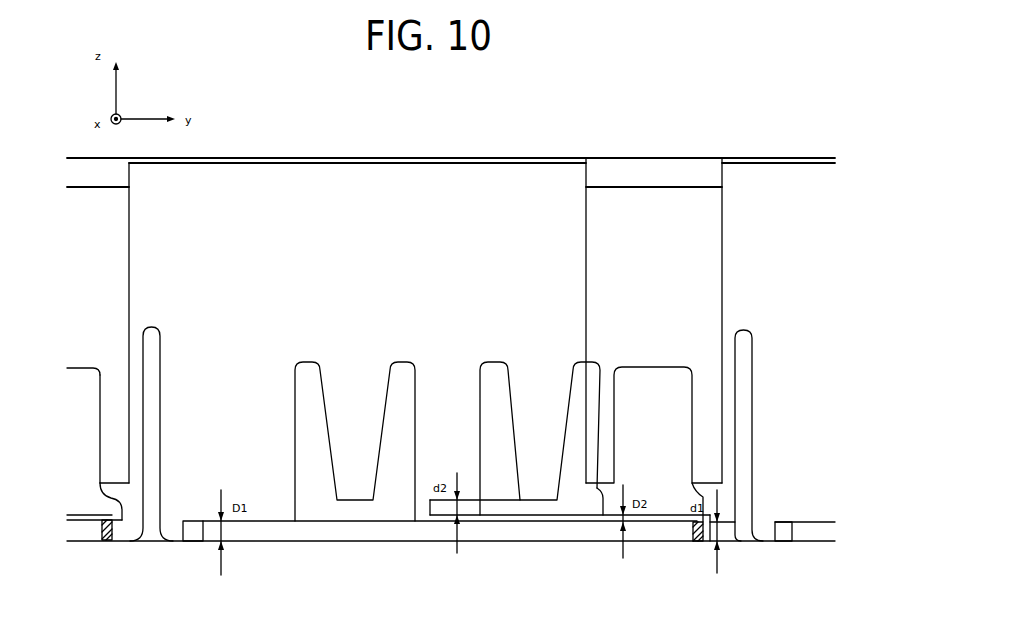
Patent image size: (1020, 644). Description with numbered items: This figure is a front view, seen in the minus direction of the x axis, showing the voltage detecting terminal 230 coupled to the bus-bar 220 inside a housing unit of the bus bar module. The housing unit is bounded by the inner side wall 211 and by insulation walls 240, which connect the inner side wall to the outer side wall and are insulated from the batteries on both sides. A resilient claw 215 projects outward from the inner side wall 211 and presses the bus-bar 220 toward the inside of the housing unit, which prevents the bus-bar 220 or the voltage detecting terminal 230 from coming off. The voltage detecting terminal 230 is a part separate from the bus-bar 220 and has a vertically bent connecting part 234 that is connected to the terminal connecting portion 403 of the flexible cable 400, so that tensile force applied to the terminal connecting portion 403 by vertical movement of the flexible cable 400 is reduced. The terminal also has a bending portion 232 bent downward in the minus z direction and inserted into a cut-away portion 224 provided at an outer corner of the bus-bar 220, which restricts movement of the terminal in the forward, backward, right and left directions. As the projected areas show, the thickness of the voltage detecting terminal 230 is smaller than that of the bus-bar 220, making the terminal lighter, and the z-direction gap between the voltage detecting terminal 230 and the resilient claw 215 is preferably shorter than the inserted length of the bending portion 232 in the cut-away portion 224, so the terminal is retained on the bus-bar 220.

The flexible cable 400 is at (459, 158).
The inner side wall 211 is at (272, 180).
The terminal connecting portion 403 is at (722, 245).
The connecting part 234 is at (672, 367).
The resilient claw 215 is at (447, 407).
The voltage detecting terminal 230 is at (590, 515).
The insulation wall 240 is at (150, 537).
The cut-away portion 224 is at (190, 541).
The bus-bar 220 is at (263, 541).
The bending portion 232 is at (697, 532).